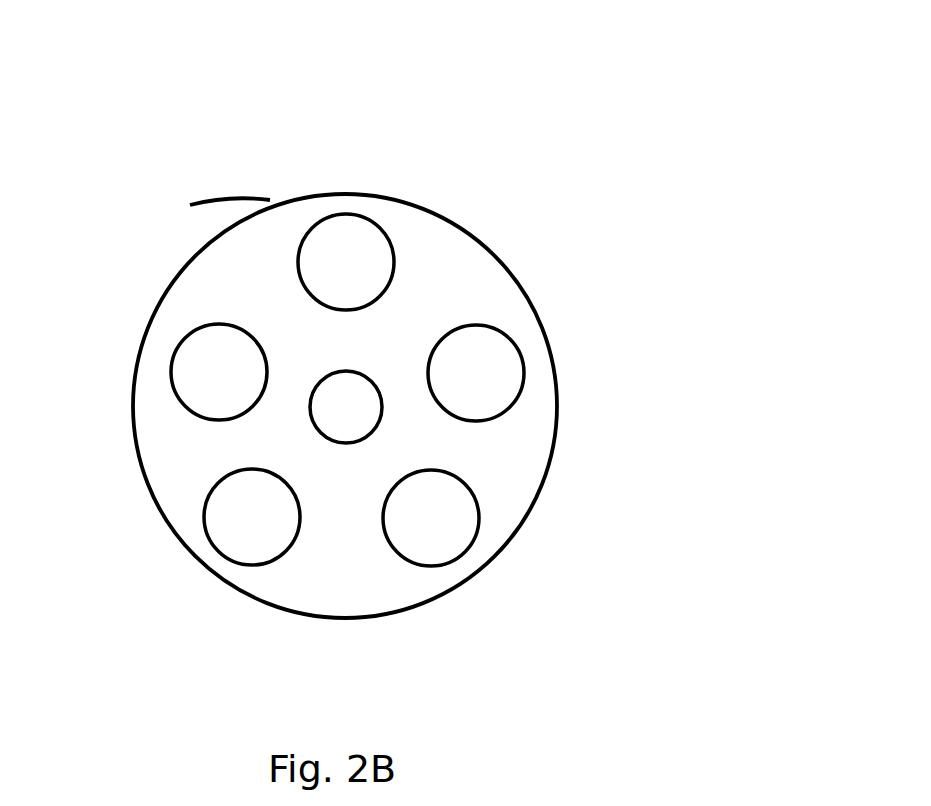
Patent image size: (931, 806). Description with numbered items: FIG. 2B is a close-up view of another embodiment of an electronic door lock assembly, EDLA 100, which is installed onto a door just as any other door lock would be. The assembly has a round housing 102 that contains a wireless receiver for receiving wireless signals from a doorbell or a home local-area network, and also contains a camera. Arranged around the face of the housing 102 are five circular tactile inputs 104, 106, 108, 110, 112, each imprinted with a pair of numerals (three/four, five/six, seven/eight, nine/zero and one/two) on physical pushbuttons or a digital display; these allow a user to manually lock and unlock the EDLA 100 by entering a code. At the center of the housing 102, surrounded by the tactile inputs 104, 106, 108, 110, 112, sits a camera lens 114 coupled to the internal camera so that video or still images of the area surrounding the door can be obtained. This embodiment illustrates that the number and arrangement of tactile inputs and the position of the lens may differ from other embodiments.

The EDLA 100 is at (470, 121).
The housing 102 is at (267, 208).
The tactile input 104 is at (370, 220).
The tactile input 106 is at (508, 338).
The tactile input 108 is at (478, 522).
The tactile input 110 is at (203, 518).
The tactile input 112 is at (177, 350).
The camera lens 114 is at (366, 418).